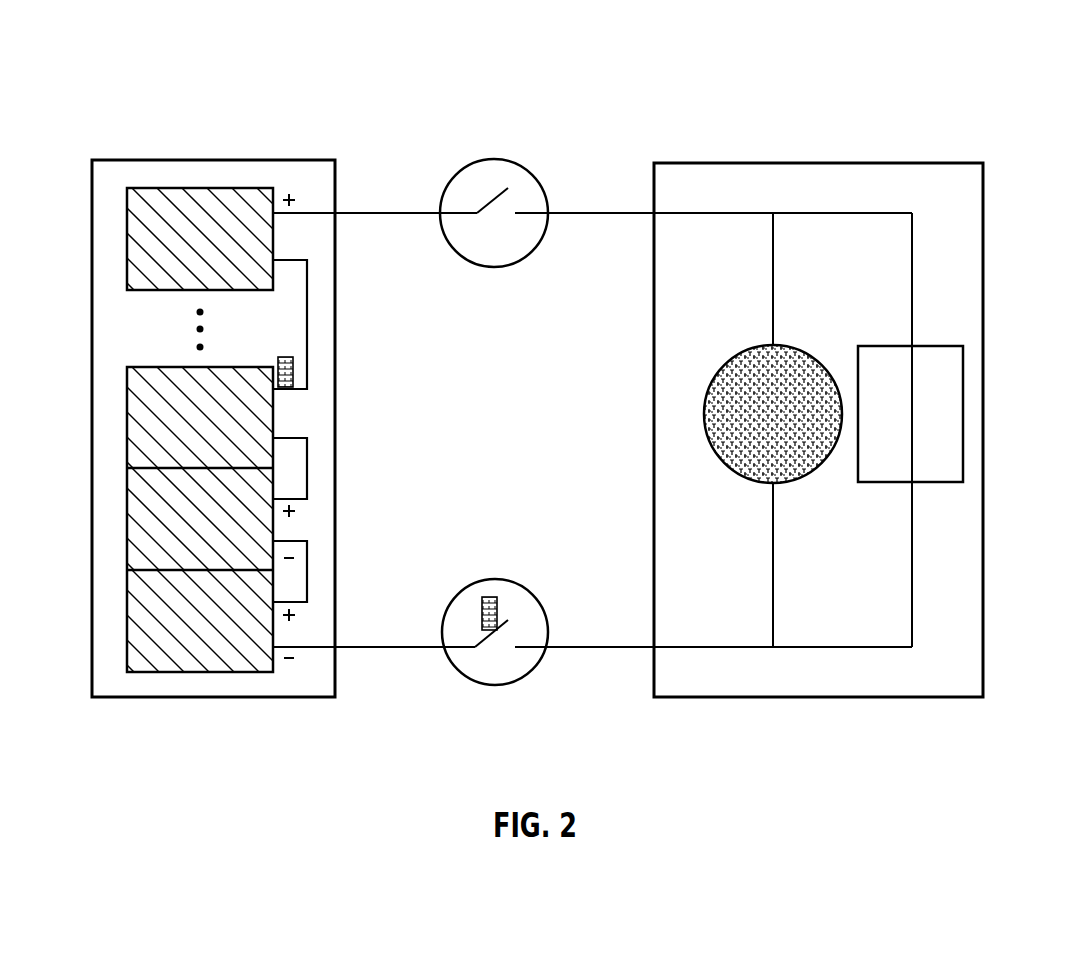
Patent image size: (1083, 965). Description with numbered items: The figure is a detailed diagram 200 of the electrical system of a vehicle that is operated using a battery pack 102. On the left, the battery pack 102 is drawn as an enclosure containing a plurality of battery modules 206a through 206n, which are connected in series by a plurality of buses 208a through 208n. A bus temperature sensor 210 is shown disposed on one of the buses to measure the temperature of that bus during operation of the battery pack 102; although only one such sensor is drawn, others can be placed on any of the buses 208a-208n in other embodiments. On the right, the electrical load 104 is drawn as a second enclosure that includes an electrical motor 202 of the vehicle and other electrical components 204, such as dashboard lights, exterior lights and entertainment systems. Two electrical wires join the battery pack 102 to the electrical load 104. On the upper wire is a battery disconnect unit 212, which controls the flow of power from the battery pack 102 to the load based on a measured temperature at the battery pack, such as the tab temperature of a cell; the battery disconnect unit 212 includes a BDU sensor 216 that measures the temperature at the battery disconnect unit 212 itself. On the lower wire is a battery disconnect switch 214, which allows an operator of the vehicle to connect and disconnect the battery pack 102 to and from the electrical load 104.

The detailed diagram 200 is at (900, 52).
The battery pack 102 is at (143, 162).
The electrical load 104 is at (733, 162).
The electrical motor 202 is at (752, 348).
The other electrical components 204 is at (937, 345).
The battery module 206a is at (180, 291).
The battery module 206n is at (131, 673).
The bus 208a is at (308, 307).
The bus 208n is at (308, 552).
The bus temperature sensor 210 is at (296, 372).
The battery disconnect unit 212 is at (449, 185).
The battery disconnect switch 214 is at (517, 684).
The BDU sensor 216 is at (481, 610).